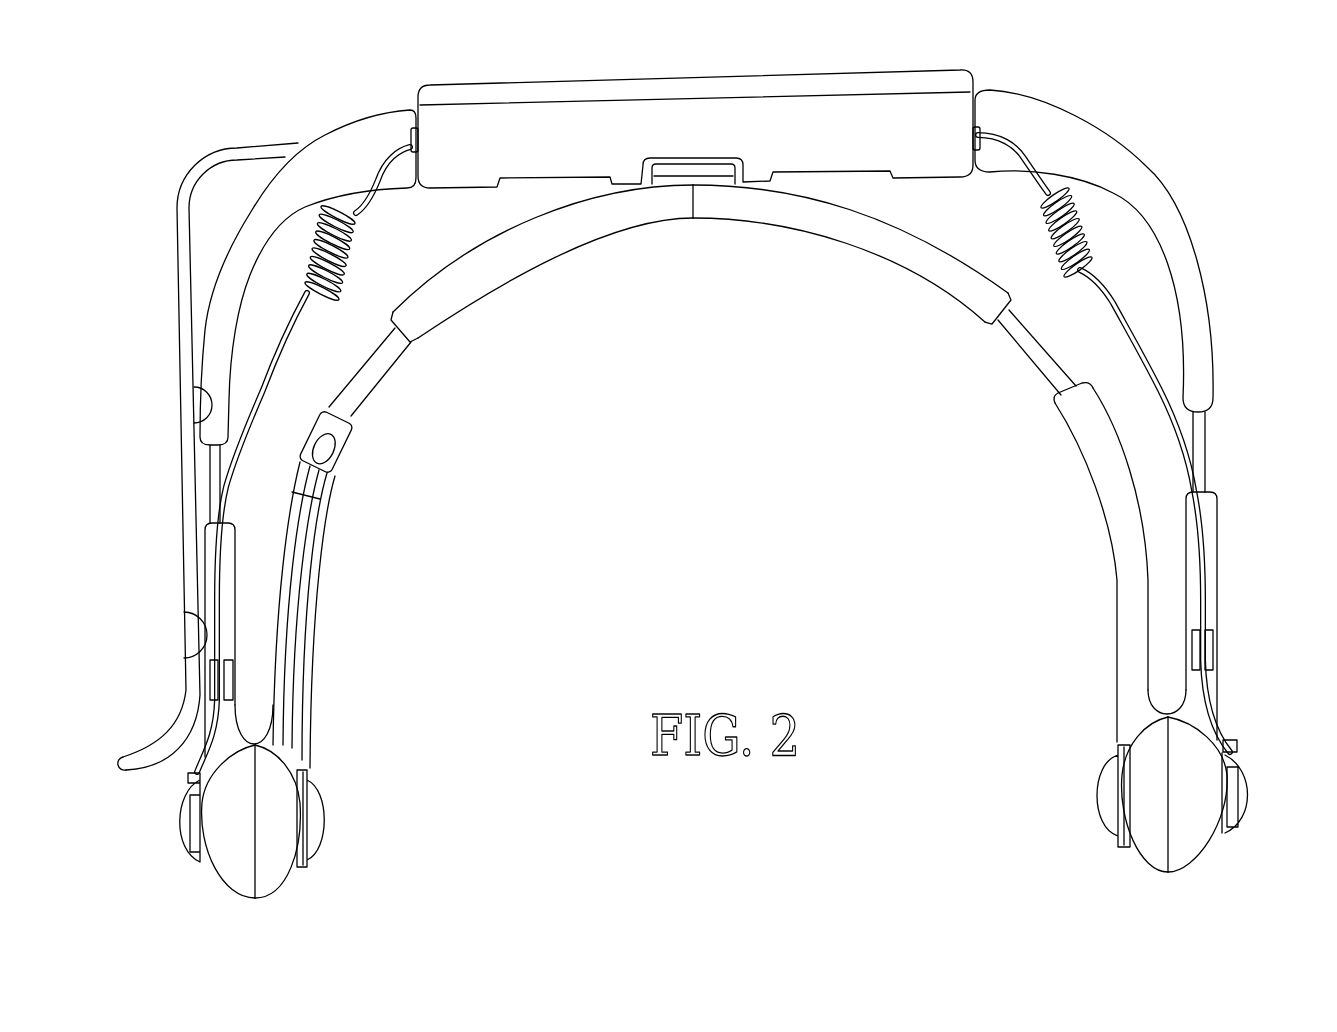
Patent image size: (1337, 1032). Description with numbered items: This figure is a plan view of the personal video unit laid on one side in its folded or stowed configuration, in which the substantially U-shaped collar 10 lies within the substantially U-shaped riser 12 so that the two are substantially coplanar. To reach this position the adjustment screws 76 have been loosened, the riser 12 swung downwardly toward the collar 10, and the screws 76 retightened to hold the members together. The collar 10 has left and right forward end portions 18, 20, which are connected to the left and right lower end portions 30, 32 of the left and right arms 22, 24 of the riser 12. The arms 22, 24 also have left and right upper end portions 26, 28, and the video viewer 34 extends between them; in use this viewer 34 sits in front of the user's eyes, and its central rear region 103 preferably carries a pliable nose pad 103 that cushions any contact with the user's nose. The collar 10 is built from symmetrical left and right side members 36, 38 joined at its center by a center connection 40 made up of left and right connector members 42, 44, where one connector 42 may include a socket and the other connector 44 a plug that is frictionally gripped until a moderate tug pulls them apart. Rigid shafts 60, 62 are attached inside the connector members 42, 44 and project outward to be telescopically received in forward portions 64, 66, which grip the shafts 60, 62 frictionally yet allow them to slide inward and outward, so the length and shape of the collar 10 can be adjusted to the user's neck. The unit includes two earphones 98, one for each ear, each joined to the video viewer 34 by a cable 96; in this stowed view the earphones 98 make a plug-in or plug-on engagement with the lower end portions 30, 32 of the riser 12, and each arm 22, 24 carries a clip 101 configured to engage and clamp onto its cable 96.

The collar 10 is at (708, 474).
The riser 12 is at (701, 402).
The left forward end portion 18 is at (1150, 760).
The right forward end portion 20 is at (275, 830).
The left arm 22 is at (1213, 505).
The right arm 24 is at (222, 597).
The left upper end portion 26 is at (1047, 125).
The right upper end portion 28 is at (352, 136).
The left lower end portion 30 is at (1146, 794).
The right lower end portion 32 is at (230, 845).
The video viewer 34 is at (462, 130).
The left side member 36 is at (330, 498).
The right side member 38 is at (1062, 425).
The center connection 40 is at (693, 220).
The left connector member 42 is at (640, 203).
The right connector member 44 is at (740, 203).
The rigid shaft 60 is at (710, 476).
The rigid shaft 62 is at (1012, 331).
The forward portion 64 is at (305, 600).
The forward portion 66 is at (1066, 562).
The adjustment screws 76 is at (322, 822).
The cable 96 is at (280, 366).
The earphone 98 is at (180, 823).
The clip 101 is at (205, 674).
The pliable nose pad 103 is at (700, 155).